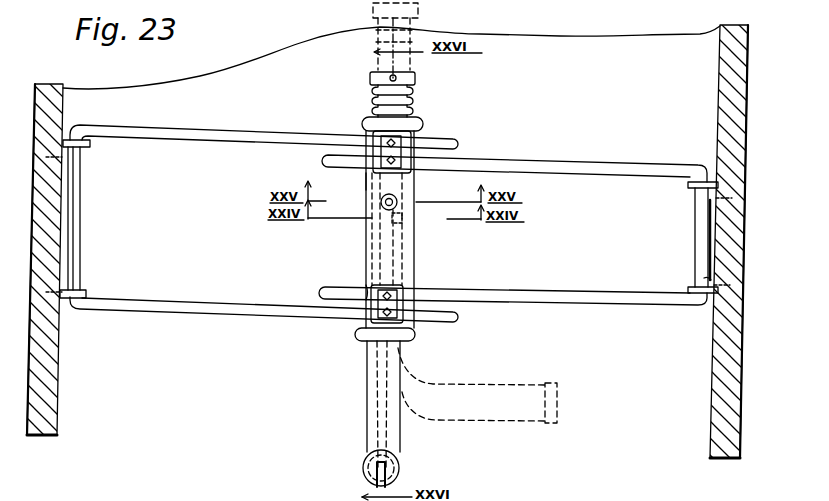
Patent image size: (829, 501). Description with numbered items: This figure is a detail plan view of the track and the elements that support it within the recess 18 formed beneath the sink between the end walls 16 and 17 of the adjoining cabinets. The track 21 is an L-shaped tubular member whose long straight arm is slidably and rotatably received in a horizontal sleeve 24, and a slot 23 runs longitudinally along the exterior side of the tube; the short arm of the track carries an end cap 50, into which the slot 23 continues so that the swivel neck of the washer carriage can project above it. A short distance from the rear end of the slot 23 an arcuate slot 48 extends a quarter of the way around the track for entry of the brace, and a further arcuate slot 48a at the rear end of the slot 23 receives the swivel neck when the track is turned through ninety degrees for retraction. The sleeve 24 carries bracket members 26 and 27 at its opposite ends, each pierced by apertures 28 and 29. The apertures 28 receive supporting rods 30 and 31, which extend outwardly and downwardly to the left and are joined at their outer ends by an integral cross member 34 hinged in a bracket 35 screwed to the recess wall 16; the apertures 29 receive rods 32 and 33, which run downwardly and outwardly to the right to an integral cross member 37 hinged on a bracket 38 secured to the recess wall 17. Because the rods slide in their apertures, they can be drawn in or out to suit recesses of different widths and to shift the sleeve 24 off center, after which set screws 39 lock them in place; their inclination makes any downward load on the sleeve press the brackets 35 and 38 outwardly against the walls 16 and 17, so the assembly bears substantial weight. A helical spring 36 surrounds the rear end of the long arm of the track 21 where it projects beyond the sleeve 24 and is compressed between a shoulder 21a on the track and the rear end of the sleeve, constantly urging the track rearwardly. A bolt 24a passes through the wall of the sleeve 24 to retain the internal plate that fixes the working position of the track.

The end wall 16 is at (55, 418).
The end wall 17 is at (712, 438).
The recess 18 is at (619, 420).
The track 21 is at (367, 405).
The shoulder 21a is at (412, 80).
The slot 23 is at (386, 472).
The sleeve 24 is at (407, 268).
The bolt 24a is at (381, 204).
The bracket member 26 is at (373, 284).
The bracket member 27 is at (375, 177).
The apertures 28 is at (419, 132).
The apertures 29 is at (376, 148).
The supporting rod 30 is at (224, 308).
The supporting rod 31 is at (234, 139).
The supporting rod 32 is at (587, 302).
The supporting rod 33 is at (588, 176).
The cross member 34 is at (75, 224).
The bracket 35 is at (83, 288).
The helical spring 36 is at (413, 97).
The cross member 37 is at (696, 234).
The bracket 38 is at (702, 267).
The set screws 39 is at (407, 168).
The arcuate slot 48 is at (418, 244).
The arcuate slot 48a is at (393, 220).
The end cap 50 is at (364, 467).